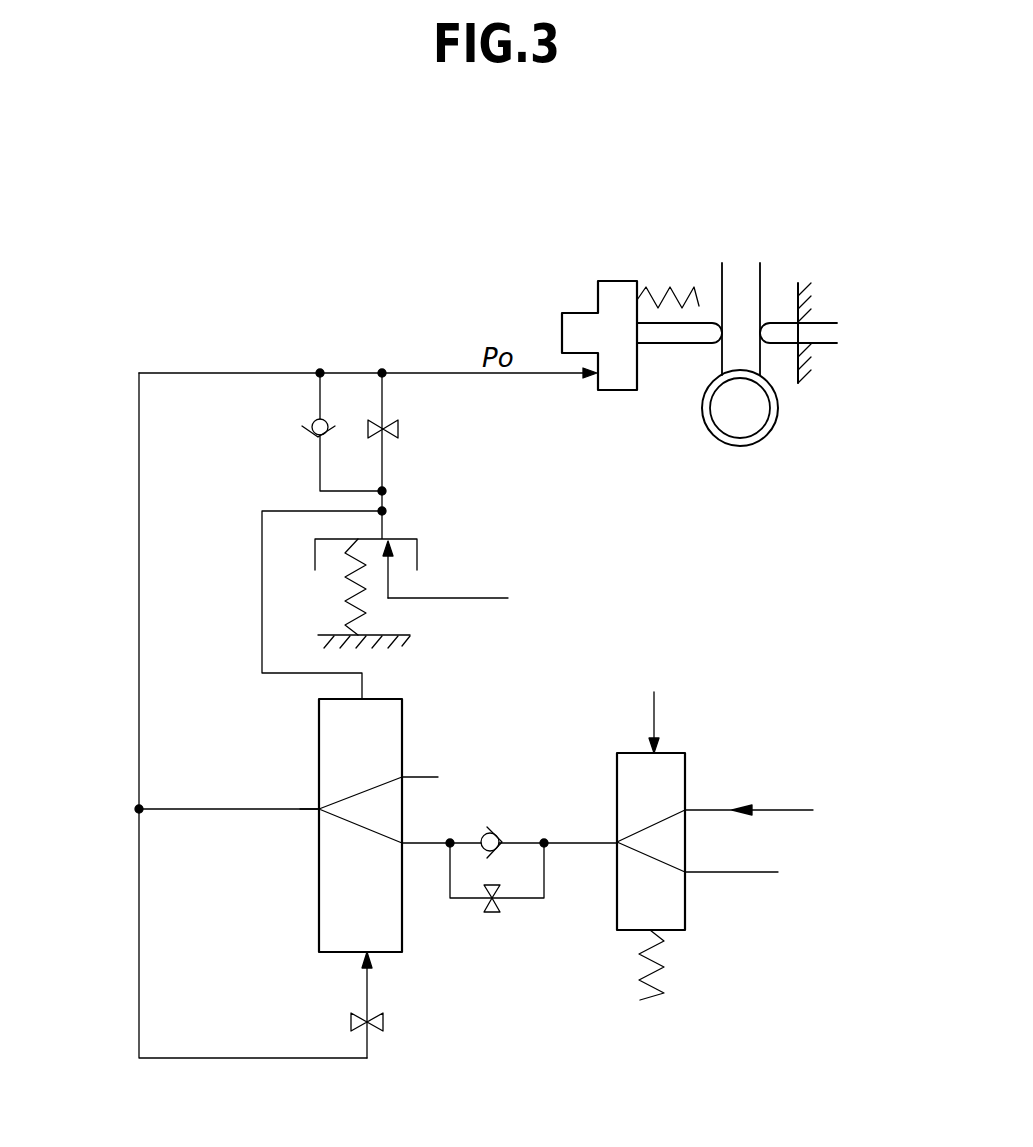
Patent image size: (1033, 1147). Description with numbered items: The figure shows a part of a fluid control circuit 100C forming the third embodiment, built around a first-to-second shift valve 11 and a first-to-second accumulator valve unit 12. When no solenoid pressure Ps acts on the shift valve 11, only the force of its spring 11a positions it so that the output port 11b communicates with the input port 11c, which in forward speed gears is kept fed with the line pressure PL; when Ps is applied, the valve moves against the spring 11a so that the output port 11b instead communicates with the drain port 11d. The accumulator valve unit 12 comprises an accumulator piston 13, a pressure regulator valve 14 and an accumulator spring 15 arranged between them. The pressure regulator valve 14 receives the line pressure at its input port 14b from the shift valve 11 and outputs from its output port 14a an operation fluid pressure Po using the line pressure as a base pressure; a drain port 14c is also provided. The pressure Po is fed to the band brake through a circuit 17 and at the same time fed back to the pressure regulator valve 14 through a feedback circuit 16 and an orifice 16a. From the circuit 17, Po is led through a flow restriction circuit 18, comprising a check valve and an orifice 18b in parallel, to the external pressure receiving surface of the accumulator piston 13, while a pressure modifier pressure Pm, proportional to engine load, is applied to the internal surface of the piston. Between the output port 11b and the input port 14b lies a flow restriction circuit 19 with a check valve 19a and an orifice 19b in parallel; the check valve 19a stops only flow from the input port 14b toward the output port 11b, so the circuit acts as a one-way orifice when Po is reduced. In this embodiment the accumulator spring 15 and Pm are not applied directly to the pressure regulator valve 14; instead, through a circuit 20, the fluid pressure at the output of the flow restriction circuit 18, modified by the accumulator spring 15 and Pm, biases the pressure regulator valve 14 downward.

The fluid control circuit 100C is at (617, 164).
The 1–2 shift valve 11 is at (677, 840).
The spring 11a is at (660, 980).
The output port 11b is at (617, 842).
The input port 11c is at (685, 810).
The drain port 11d is at (685, 872).
The 1–2 accumulator valve unit 12 is at (306, 850).
The accumulator piston 13 is at (389, 579).
The pressure regulator valve 14 is at (319, 870).
The output port 14a is at (319, 809).
The input port 14b is at (402, 843).
The drain port 14c is at (402, 777).
The accumulator spring 15 is at (350, 590).
The feedback circuit 16 is at (362, 1035).
The orifice 16a is at (383, 1022).
The circuit 17 is at (139, 547).
The flow restriction circuit 18 is at (426, 442).
The orifice 18b is at (398, 429).
The flow restriction circuit 19 is at (534, 919).
The check valve 19a is at (498, 849).
The orifice 19b is at (492, 915).
The circuit 20 is at (262, 567).